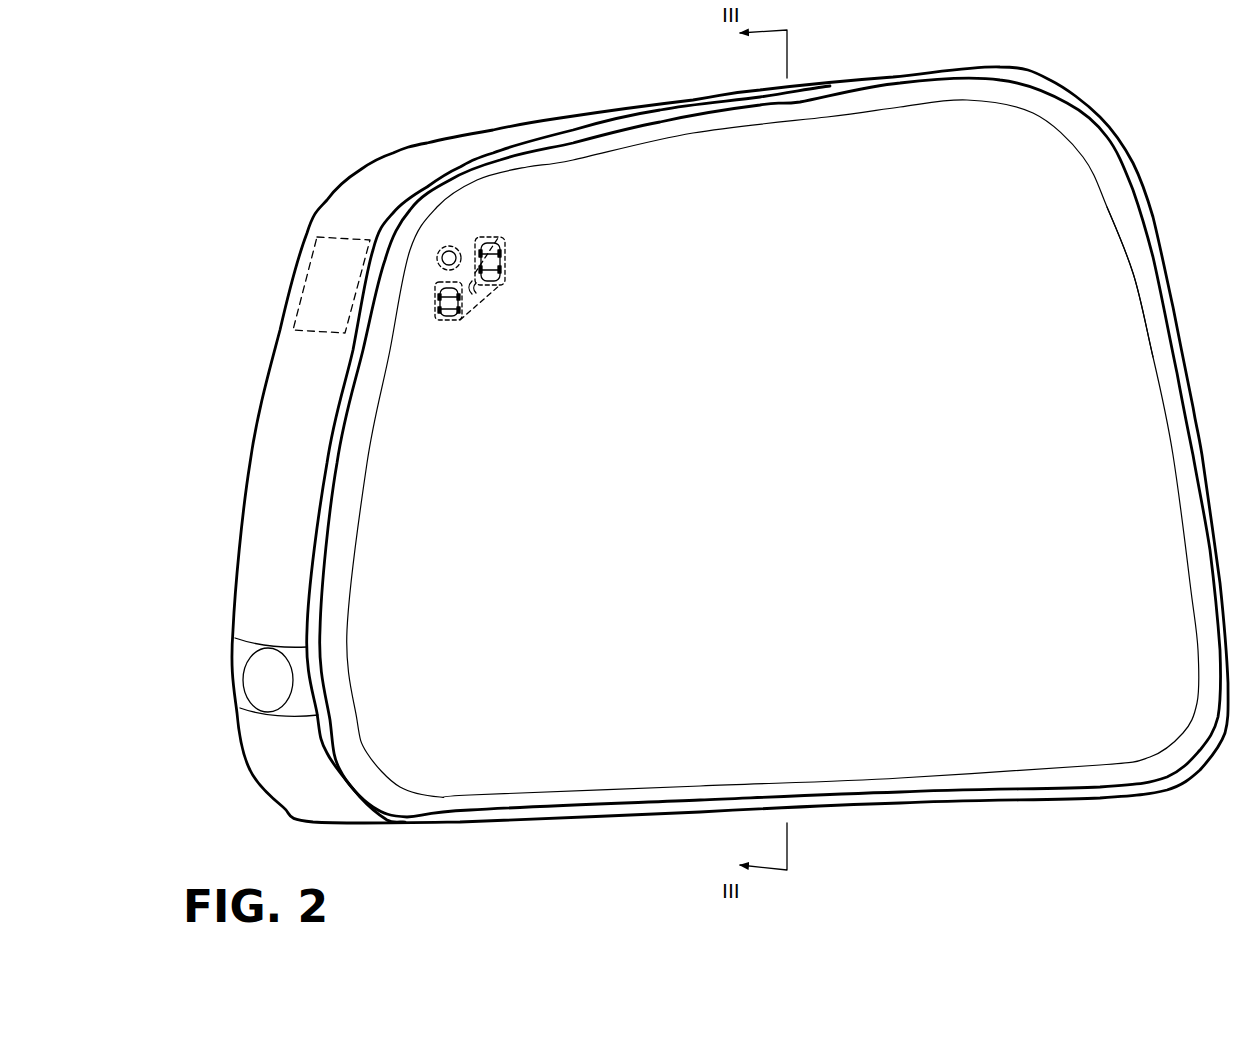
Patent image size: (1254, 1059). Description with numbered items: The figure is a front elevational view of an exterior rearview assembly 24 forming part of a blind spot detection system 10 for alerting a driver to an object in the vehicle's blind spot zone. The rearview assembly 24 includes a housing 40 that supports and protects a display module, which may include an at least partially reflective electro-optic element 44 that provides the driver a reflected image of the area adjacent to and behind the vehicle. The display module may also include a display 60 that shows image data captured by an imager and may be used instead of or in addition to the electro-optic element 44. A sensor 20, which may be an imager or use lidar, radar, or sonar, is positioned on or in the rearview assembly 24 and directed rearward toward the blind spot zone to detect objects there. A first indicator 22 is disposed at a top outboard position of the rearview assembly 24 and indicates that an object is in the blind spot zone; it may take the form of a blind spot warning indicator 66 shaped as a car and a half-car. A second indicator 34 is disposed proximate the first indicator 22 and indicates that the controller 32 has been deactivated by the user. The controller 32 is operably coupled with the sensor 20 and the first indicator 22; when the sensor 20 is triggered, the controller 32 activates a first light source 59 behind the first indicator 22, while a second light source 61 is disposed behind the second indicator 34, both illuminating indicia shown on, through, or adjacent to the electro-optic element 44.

The blind spot detection system 10 is at (300, 72).
The sensor 20 is at (244, 670).
The first indicator 22 is at (497, 230).
The outside rearview assembly 24 is at (1137, 160).
The controller 32 is at (290, 285).
The second indicator 34 is at (450, 240).
The housing 40 is at (283, 470).
The electro-optic element 44 is at (836, 425).
The first light source 59 is at (503, 243).
The display 60 is at (1037, 327).
The second light source 61 is at (462, 240).
The blind spot warning indicator 66 is at (447, 287).